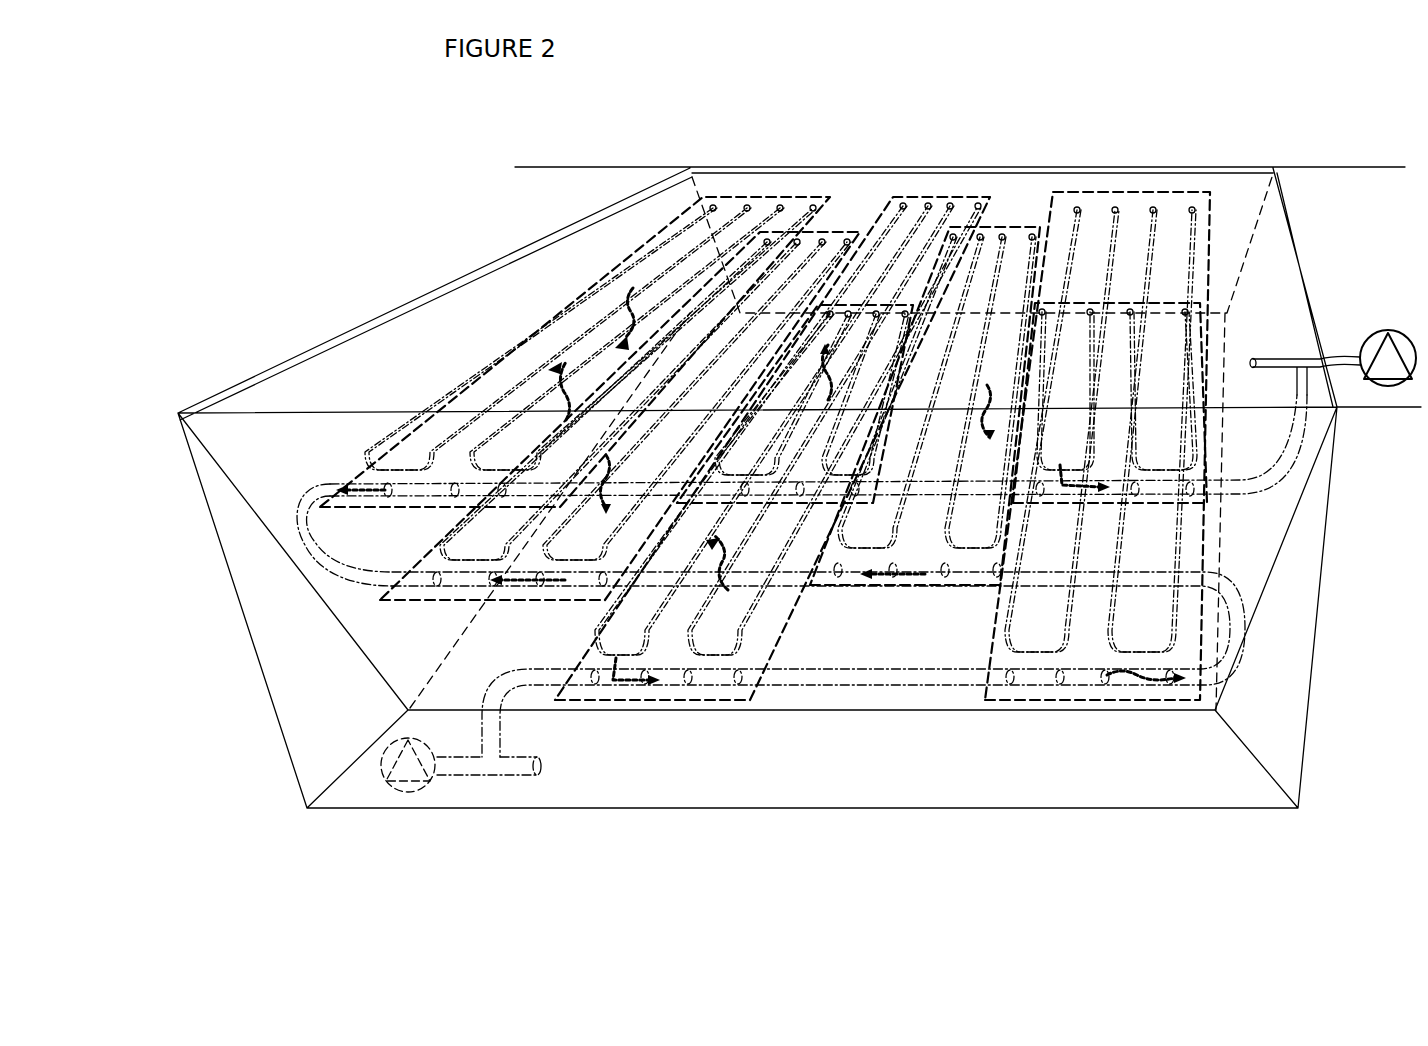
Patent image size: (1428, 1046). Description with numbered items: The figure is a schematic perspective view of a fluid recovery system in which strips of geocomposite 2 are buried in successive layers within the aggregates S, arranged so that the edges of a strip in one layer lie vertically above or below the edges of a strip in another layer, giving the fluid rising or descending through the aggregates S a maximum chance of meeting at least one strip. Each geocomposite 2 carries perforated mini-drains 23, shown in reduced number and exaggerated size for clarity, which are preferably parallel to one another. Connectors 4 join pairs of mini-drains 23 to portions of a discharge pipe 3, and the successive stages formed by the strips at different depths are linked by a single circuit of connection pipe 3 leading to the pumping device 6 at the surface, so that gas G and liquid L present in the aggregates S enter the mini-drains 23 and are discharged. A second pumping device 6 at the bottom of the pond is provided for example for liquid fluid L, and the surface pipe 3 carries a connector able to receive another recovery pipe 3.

The geocomposite strip 2 is at (1007, 227).
The perforated mini-drain 23 is at (732, 243).
The discharge pipe 3 is at (505, 678).
The connector 4 is at (1165, 487).
The pumping device 6 is at (1388, 386).
The liquid fluid L is at (612, 470).
The gaseous fluid G is at (856, 455).
The aggregates S is at (1242, 542).